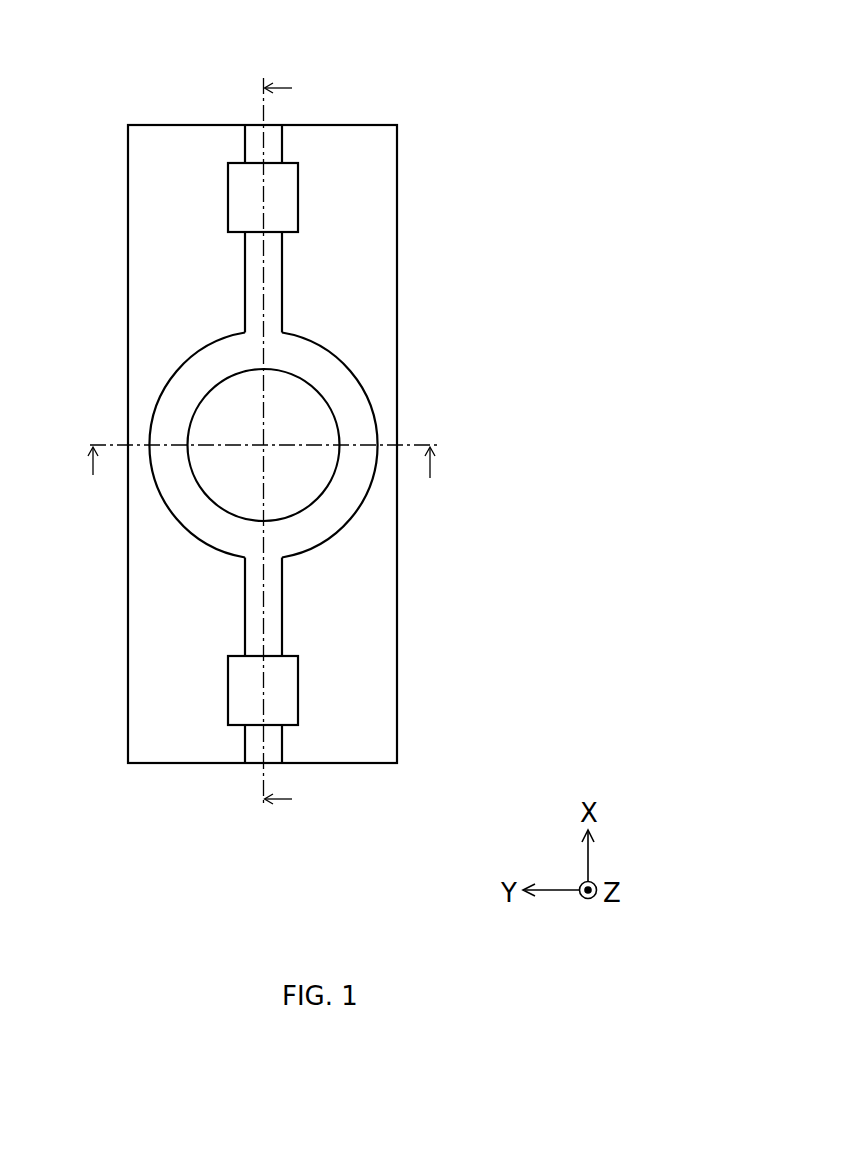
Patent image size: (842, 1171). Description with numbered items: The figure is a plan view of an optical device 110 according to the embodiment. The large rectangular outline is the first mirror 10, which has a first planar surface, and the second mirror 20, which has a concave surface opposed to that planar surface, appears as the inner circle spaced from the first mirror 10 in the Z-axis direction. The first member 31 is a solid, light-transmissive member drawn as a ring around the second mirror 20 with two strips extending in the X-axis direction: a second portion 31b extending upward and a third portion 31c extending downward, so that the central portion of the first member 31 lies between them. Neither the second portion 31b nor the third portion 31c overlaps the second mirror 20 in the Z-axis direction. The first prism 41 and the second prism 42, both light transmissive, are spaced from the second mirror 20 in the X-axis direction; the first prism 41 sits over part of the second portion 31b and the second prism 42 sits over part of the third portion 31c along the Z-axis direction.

The optical device 110 is at (457, 63).
The first mirror 10 is at (370, 568).
The second mirror 20 is at (220, 422).
The first member 31 is at (342, 393).
The second portion 31b is at (273, 275).
The third portion 31c is at (272, 608).
The first prism 41 is at (281, 201).
The second prism 42 is at (277, 690).